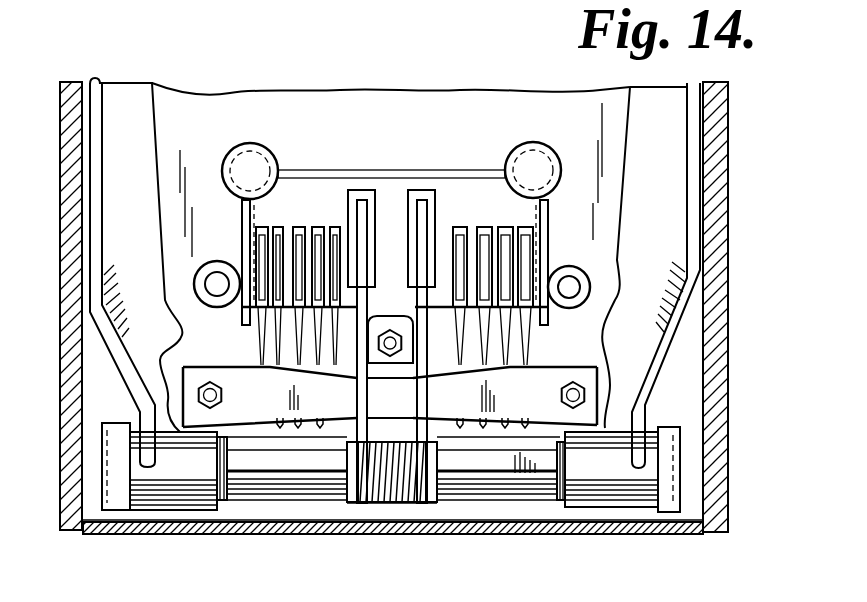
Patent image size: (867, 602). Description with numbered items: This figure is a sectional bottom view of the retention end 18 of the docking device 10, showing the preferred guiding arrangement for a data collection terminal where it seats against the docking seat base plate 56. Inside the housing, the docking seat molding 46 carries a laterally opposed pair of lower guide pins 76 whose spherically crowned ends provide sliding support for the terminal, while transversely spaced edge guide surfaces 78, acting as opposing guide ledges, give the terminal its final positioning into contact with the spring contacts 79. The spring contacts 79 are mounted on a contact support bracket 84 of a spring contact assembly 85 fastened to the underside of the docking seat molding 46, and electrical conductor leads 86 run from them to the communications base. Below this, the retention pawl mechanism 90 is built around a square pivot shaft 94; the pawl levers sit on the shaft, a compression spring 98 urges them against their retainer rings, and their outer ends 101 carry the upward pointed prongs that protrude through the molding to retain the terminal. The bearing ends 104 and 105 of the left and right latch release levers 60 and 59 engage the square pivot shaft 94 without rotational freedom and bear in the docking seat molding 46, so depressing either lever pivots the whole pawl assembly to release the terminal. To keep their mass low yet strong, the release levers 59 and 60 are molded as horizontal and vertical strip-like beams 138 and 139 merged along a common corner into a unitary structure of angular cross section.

The docking device 10 is at (737, 203).
The retention end 18 is at (677, 546).
The docking seat molding 46 is at (95, 439).
The docking seat base plate 56 is at (118, 537).
The right latch release lever 59 is at (102, 338).
The left latch release lever 60 is at (677, 347).
The lower guide pins 76 is at (243, 150).
The edge guide surfaces 78 is at (253, 220).
The spring contacts 79 is at (300, 223).
The contact support bracket 84 is at (474, 430).
The spring contact assembly 85 is at (543, 361).
The electrical conductor leads 86 is at (492, 435).
The retention pawl mechanism 90 is at (337, 506).
The pivot shaft 94 is at (279, 485).
The compression spring 98 is at (398, 505).
The outer ends of pawl levers 101 is at (416, 215).
The bearing end of left latch release lever 104 is at (634, 509).
The bearing end of right latch release lever 105 is at (183, 512).
The horizontal beam 138 is at (158, 115).
The vertical beam 139 is at (108, 90).